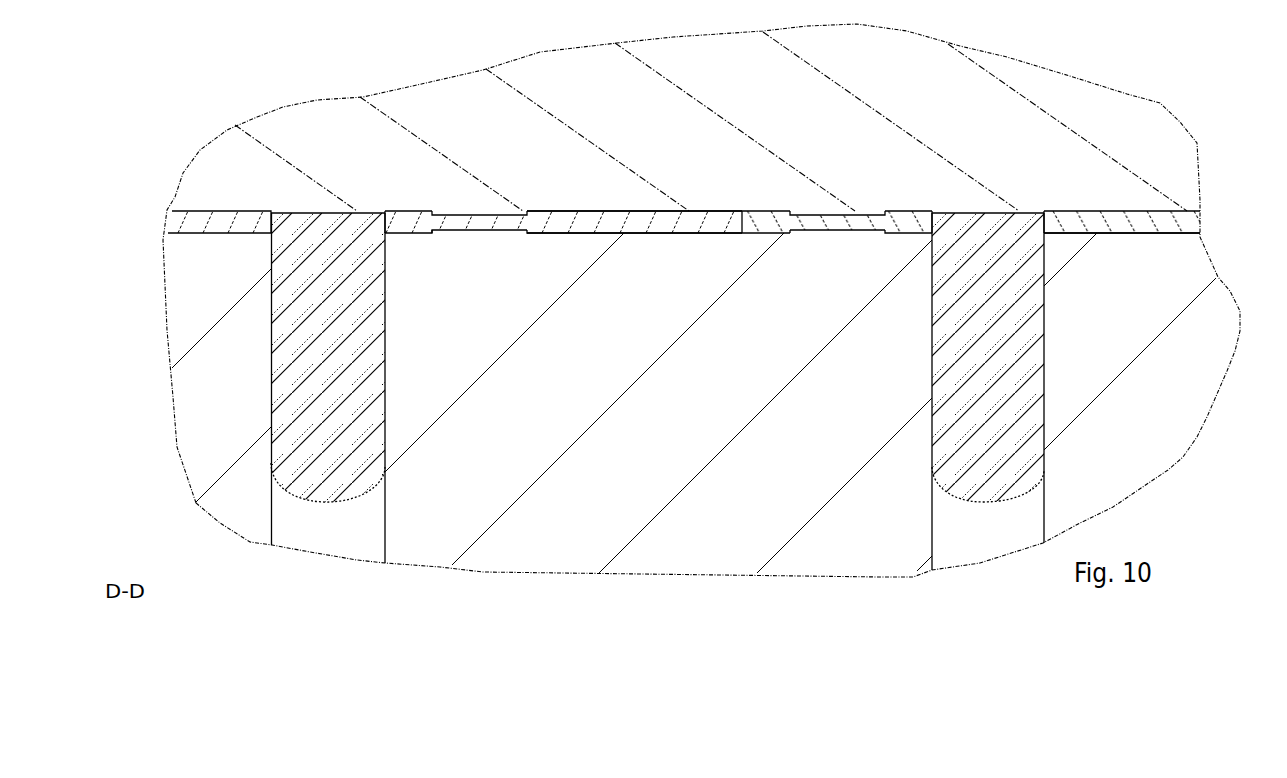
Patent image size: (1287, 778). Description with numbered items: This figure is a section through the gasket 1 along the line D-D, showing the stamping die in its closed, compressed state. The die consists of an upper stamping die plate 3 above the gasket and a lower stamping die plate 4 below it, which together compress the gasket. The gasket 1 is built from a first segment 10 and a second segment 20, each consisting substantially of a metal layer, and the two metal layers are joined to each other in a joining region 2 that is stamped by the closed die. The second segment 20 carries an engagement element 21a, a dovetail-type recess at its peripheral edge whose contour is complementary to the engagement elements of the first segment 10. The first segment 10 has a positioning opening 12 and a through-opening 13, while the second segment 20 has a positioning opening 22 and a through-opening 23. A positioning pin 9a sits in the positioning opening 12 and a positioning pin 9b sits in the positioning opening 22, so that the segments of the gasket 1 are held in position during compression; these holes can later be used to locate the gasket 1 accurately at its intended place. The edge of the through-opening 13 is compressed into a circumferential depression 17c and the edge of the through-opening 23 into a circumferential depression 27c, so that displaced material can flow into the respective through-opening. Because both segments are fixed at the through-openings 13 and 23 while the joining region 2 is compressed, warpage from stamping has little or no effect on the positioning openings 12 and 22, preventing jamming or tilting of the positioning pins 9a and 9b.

The gasket 1 is at (1128, 238).
The joining region 2 is at (701, 228).
The upper stamping die plate 3 is at (1010, 120).
The lower stamping die plate 4 is at (1182, 412).
The positioning pin 9a is at (1017, 363).
The positioning pin 9b is at (363, 362).
The first segment 10 is at (767, 218).
The positioning opening 12 is at (1018, 214).
The through-opening 13 is at (836, 218).
The circumferential depression 17c is at (871, 230).
The second segment 20 is at (180, 228).
The engagement element 21a is at (635, 221).
The positioning opening 22 is at (295, 213).
The through-opening 23 is at (482, 220).
The circumferential depression 27c is at (437, 233).